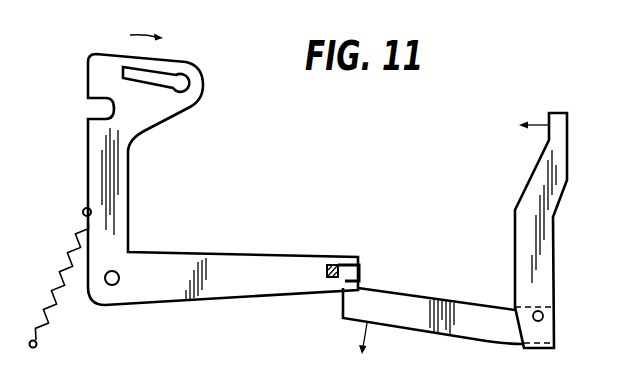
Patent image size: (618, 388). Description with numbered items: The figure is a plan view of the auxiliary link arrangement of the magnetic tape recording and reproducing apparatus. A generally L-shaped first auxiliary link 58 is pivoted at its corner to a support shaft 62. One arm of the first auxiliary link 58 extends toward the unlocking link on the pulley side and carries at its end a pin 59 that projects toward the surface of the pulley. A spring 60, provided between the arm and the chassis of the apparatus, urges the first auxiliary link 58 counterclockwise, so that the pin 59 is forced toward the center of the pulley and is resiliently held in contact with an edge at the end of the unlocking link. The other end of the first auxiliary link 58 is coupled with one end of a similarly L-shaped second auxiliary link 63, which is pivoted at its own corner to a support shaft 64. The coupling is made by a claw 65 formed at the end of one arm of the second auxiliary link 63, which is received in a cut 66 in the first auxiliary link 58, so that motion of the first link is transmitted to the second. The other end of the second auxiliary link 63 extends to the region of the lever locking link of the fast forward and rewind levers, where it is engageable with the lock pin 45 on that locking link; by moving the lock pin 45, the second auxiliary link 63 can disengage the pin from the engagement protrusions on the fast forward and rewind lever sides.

The lock pin 45 is at (515, 143).
The first auxiliary link 58 is at (228, 265).
The pin 59 is at (135, 105).
The spring 60 is at (63, 267).
The support shaft 62 is at (112, 285).
The second auxiliary link 63 is at (422, 307).
The support shaft 64 is at (543, 316).
The claw 65 is at (345, 263).
The cut 66 is at (333, 265).